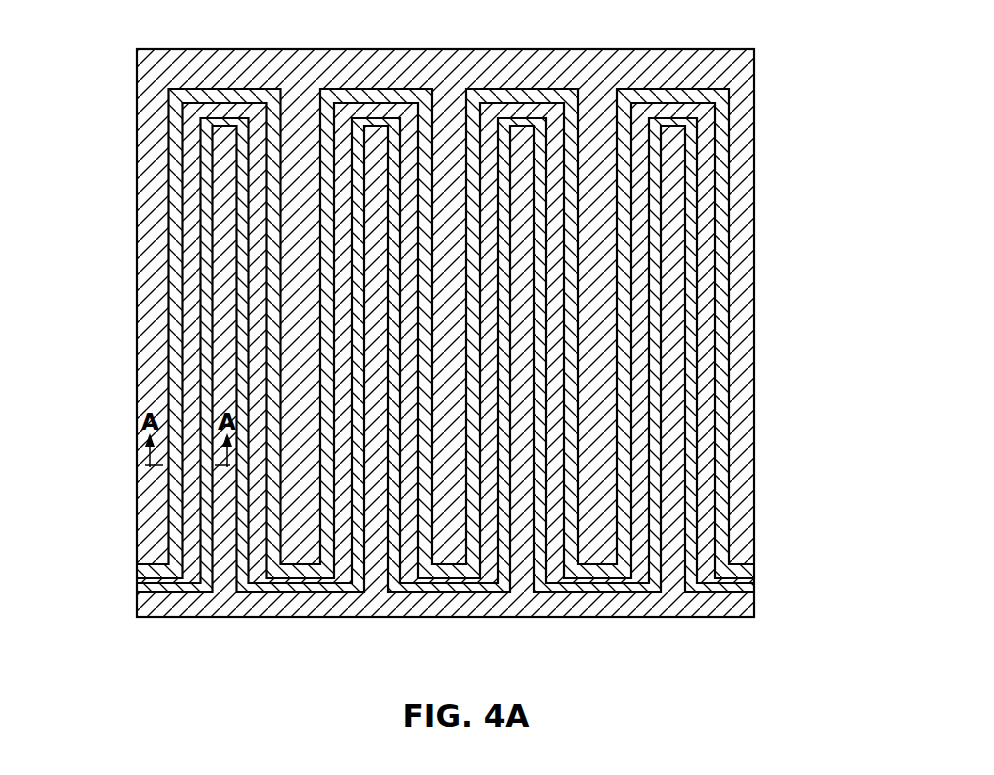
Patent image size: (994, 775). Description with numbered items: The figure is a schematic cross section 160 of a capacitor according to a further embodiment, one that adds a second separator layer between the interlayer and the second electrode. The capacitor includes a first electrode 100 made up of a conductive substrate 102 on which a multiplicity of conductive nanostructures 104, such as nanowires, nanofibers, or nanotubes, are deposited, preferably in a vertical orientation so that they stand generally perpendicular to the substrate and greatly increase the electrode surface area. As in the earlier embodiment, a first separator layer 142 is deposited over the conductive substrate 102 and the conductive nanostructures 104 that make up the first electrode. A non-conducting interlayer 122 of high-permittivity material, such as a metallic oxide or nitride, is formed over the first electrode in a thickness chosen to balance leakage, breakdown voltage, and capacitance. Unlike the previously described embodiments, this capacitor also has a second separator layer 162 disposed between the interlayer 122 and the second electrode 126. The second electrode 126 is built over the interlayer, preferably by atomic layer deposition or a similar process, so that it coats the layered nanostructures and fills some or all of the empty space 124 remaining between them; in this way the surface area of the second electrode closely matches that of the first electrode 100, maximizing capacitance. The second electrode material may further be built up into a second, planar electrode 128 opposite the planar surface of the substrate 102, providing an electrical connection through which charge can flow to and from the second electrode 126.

The first electrode 100 is at (439, 341).
The conductive substrate 102 is at (223, 603).
The conductive nanostructures 104 is at (222, 312).
The interlayer 122 is at (312, 580).
The empty space 124 is at (453, 96).
The second electrode 126 is at (302, 97).
The planar electrode 128 is at (686, 75).
The first separator layer 142 is at (387, 118).
The cross section 160 is at (439, 335).
The second separator layer 162 is at (217, 97).